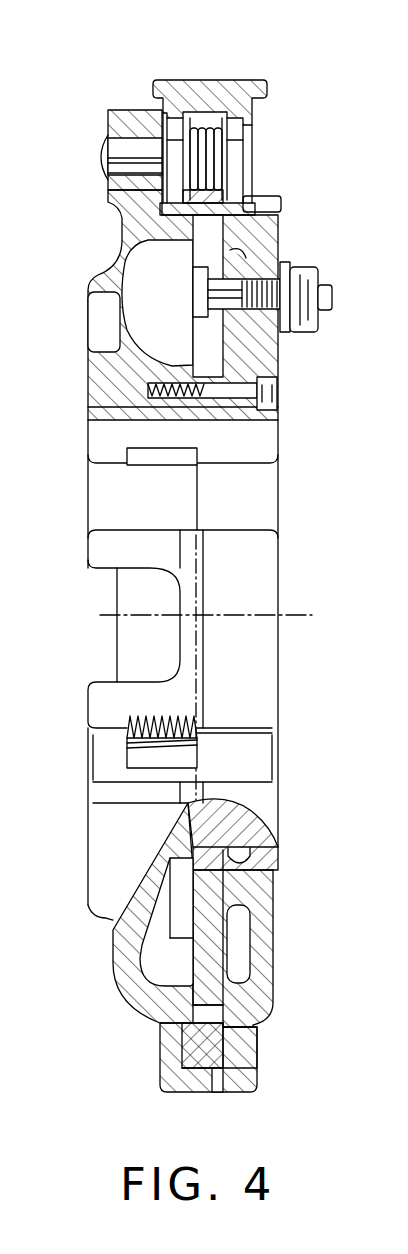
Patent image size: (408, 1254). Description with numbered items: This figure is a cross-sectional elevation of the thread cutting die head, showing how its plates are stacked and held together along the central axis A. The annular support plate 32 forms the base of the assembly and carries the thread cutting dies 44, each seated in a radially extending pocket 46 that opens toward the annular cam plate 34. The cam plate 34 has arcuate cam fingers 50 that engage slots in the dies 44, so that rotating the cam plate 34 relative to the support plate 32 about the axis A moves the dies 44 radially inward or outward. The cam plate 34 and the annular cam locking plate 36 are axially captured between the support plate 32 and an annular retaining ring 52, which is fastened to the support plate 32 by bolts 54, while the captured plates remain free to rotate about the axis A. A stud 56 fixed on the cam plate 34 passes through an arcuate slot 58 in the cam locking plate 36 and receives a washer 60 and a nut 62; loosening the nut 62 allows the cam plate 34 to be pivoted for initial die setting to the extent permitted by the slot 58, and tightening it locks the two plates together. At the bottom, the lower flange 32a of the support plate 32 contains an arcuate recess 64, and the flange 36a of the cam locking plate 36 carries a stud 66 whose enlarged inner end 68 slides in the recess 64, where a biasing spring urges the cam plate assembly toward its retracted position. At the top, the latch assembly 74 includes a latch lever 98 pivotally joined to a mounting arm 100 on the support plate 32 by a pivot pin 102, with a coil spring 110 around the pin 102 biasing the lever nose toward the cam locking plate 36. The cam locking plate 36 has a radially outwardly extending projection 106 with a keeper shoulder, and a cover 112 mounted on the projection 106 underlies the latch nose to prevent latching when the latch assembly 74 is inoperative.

The annular support plate 32 is at (128, 930).
The lower flange of support plate 32a is at (136, 1008).
The annular cam plate 34 is at (200, 995).
The annular cam locking plate 36 is at (262, 906).
The flange of cam locking plate 36a is at (247, 1022).
The thread cutting dies 44 is at (142, 456).
The radially extending pocket 46 is at (140, 766).
The arcuate cam fingers 50 is at (181, 925).
The annular retaining ring 52 is at (257, 823).
The bolts 54 is at (268, 392).
The stud 56 is at (326, 297).
The arcuate slot 58 is at (258, 288).
The washer 60 is at (286, 270).
The nut 62 is at (306, 323).
The arcuate recess 64 is at (183, 1052).
The stud 66 is at (251, 1050).
The enlarged inner end 68 is at (210, 1058).
The latch assembly 74 is at (250, 112).
The latch lever 98 is at (216, 90).
The mounting arm 100 is at (121, 118).
The pivot pin 102 is at (136, 165).
The radially outwardly extending projection 106 is at (258, 210).
The coil spring 110 is at (224, 133).
The cover 112 is at (262, 188).
The axis A is at (291, 615).